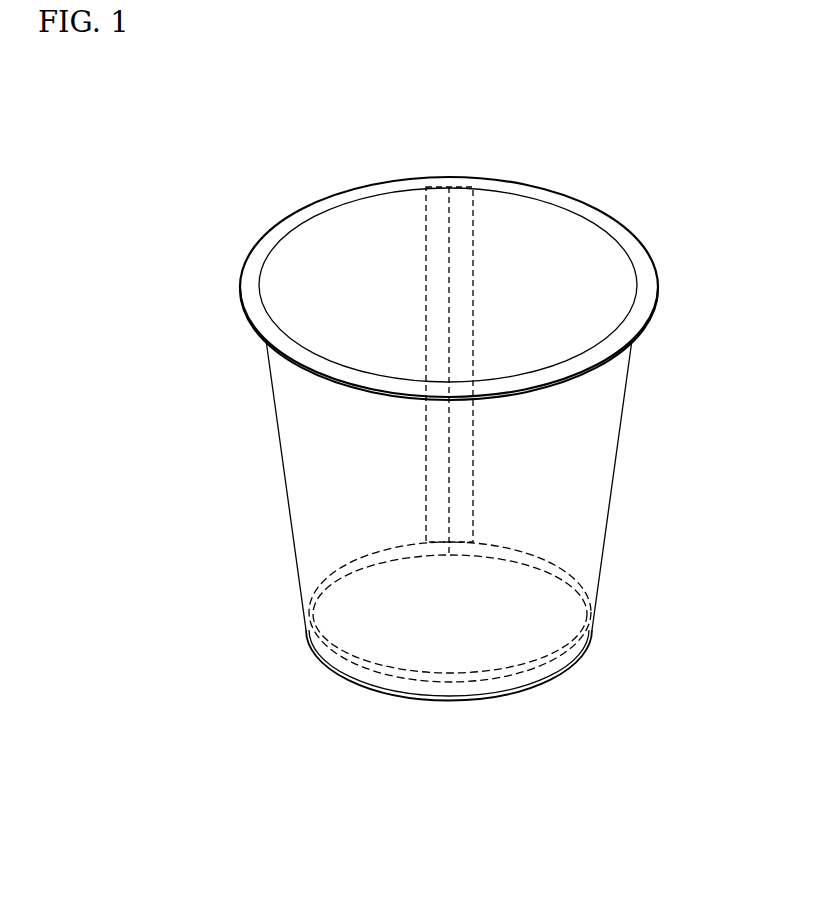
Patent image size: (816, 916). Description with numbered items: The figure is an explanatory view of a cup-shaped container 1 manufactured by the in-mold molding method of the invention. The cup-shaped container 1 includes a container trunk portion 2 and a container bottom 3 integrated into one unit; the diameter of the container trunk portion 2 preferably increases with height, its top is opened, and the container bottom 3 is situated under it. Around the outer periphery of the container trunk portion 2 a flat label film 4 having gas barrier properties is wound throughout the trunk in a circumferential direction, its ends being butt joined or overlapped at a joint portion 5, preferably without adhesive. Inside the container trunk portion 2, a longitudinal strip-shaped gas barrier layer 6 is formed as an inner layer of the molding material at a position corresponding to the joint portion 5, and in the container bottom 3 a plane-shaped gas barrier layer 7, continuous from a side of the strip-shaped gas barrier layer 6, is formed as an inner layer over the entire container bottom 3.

The cup-shaped container 1 is at (610, 168).
The container trunk portion 2 is at (654, 486).
The container bottom 3 is at (508, 632).
The label film 4 is at (315, 455).
The joint portion 5 is at (449, 255).
The longitudinal strip-shaped gas barrier layer 6 is at (427, 302).
The plane-shaped gas barrier layer 7 is at (435, 683).